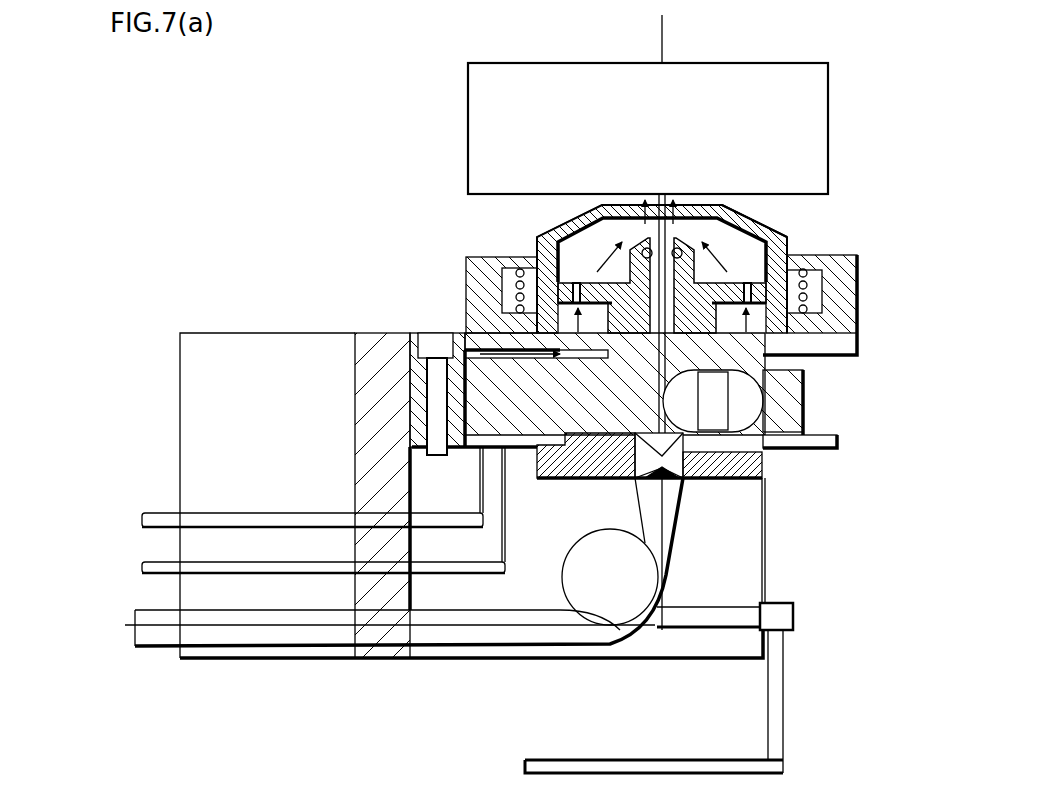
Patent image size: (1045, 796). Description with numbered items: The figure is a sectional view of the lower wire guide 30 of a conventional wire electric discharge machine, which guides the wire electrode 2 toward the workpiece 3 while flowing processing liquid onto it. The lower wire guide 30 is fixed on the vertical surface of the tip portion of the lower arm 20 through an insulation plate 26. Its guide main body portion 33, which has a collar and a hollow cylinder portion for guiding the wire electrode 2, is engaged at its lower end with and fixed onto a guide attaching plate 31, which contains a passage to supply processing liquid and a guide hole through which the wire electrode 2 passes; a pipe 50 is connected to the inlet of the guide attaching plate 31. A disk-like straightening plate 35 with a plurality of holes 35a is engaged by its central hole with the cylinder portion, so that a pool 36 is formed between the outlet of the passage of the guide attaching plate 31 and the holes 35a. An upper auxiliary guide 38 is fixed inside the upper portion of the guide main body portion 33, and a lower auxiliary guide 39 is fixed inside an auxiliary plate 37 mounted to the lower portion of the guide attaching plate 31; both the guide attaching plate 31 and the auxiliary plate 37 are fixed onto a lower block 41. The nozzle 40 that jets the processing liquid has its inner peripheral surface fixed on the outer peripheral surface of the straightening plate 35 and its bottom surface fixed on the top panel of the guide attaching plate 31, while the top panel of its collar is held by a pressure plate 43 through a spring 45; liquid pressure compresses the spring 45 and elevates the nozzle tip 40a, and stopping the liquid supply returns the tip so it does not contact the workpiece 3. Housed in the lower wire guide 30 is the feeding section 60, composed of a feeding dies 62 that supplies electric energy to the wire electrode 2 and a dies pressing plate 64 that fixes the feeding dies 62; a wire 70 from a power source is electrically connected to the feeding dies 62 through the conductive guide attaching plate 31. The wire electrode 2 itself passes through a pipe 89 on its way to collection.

The wire electrode 2 is at (662, 38).
The workpiece 3 is at (468, 123).
The lower arm 20 is at (222, 333).
The insulation plate 26 is at (355, 407).
The lower wire guide 30 is at (466, 270).
The guide attaching plate 31 is at (440, 333).
The guide main body portion 33 is at (800, 350).
The straightening plate 35 is at (610, 278).
The holes 35a is at (866, 294).
The pool 36 is at (838, 345).
The auxiliary plate 37 is at (724, 478).
The upper auxiliary guide 38 is at (748, 238).
The lower auxiliary guide 39 is at (700, 462).
The nozzle 40 is at (560, 232).
The nozzle tip 40a is at (680, 207).
The lower block 41 is at (680, 660).
The pressure plate 43 is at (466, 288).
The spring 45 is at (840, 315).
The pipe 50 is at (235, 513).
The feeding section 60 is at (685, 392).
The feeding dies 62 is at (745, 420).
The dies pressing plate 64 is at (800, 403).
The wire 70 is at (203, 575).
The pipe 89 is at (325, 650).